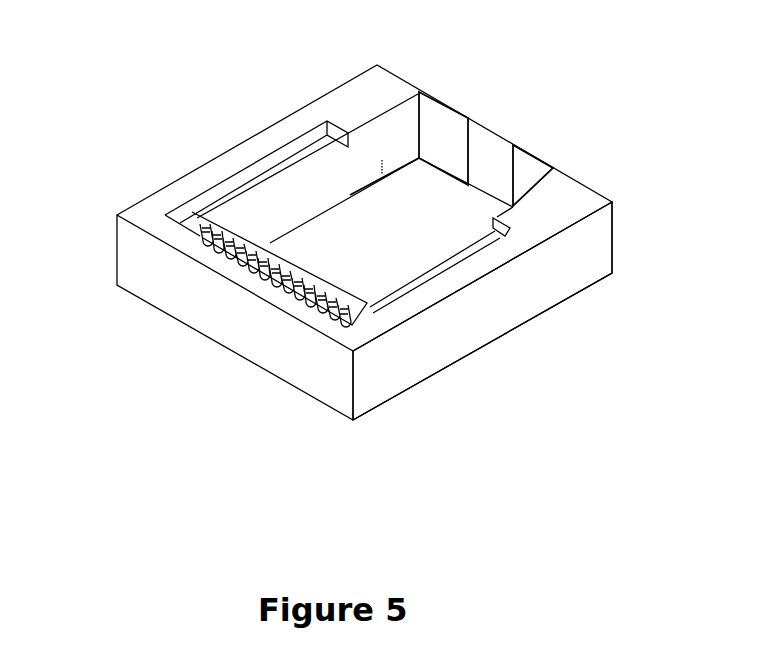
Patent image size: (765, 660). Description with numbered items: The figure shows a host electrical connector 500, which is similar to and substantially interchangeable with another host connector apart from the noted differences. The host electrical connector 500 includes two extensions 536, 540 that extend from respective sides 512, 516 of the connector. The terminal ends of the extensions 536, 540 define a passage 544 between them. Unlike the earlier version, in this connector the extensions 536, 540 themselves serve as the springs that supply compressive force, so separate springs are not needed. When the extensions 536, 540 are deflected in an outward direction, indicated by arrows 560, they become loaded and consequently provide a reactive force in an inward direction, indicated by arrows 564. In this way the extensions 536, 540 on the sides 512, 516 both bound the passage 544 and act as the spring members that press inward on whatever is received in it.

The host electrical connector 500 is at (133, 32).
The side 512 is at (253, 143).
The side 516 is at (512, 315).
The extension 536 is at (430, 96).
The extension 540 is at (553, 168).
The passage 544 is at (512, 122).
The arrows 560 is at (475, 117).
The arrows 564 is at (455, 128).